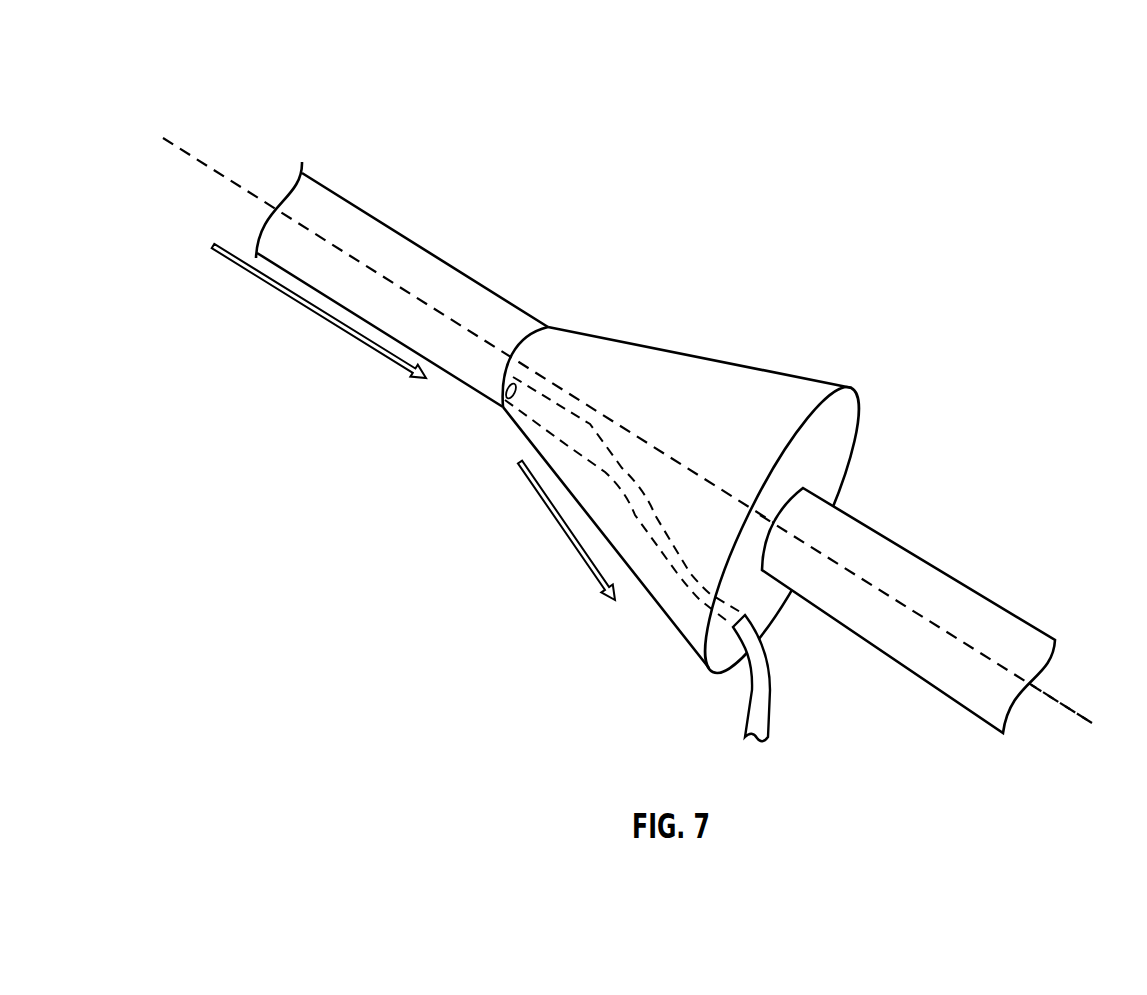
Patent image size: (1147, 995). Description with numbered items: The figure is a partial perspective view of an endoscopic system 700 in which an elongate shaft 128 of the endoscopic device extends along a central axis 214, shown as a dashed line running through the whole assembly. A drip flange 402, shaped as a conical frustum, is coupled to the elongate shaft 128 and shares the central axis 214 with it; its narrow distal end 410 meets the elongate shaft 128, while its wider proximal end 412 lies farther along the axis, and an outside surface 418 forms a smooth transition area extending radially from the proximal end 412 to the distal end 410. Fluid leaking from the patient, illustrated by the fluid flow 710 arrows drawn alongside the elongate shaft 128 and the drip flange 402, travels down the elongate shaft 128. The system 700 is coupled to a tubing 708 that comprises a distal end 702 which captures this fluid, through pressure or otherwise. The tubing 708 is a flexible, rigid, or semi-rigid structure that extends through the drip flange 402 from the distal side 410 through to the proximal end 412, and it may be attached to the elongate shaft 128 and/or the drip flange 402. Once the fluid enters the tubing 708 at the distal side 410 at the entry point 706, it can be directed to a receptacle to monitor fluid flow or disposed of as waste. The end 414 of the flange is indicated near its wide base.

The endoscopic system 700 is at (321, 91).
The elongate shaft 128 is at (438, 257).
The distal end 410 is at (548, 327).
The outside surface 418 is at (702, 444).
The proximal end 412 is at (865, 428).
The distal end of tubing 702 is at (933, 568).
The central axis 214 is at (1068, 710).
The fluid flow 710 is at (268, 291).
The fluid entry point 706 is at (480, 393).
The drip flange 402 is at (658, 630).
The output end 414 is at (702, 684).
The tubing 708 is at (771, 699).